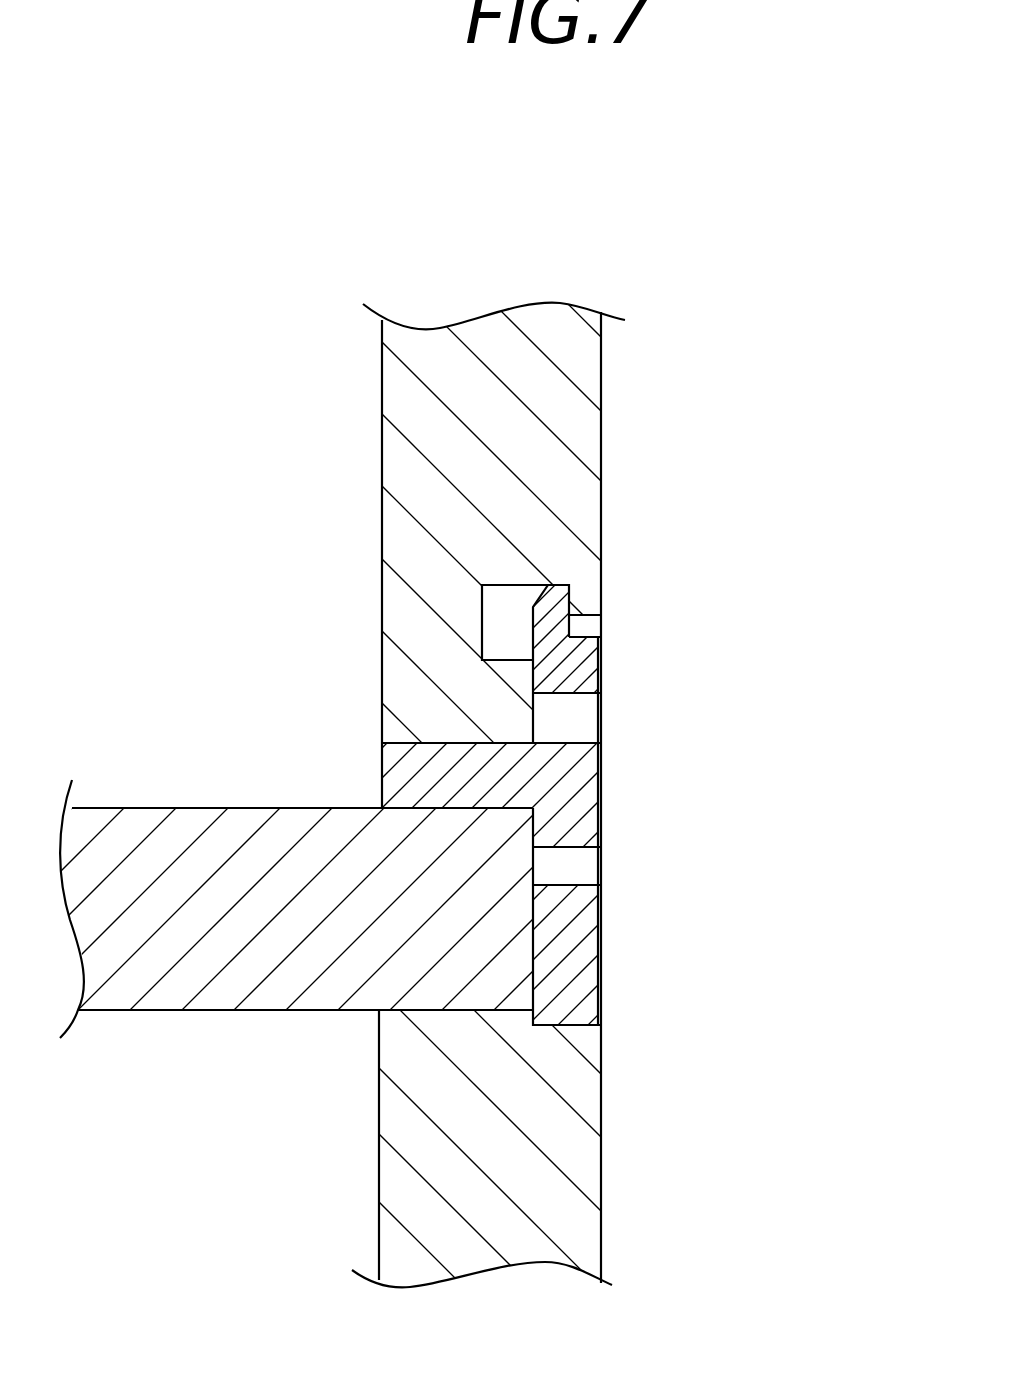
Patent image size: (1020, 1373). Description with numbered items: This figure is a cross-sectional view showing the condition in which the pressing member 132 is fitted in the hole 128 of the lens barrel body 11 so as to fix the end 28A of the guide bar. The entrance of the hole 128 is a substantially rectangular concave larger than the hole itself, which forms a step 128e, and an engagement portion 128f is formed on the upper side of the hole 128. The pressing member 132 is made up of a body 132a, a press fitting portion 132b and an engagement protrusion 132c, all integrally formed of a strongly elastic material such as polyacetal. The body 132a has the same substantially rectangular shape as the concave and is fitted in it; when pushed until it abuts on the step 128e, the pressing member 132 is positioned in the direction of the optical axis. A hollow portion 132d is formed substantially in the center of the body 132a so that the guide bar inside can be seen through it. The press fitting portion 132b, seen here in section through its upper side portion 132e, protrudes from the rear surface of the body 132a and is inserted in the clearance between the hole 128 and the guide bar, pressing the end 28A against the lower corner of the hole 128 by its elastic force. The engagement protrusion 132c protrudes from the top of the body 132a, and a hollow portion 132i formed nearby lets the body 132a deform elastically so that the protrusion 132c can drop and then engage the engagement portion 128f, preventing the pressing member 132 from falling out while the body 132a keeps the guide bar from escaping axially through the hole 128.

The lens barrel body 11 is at (587, 433).
The hole 128 is at (433, 1010).
The step 128e is at (553, 1024).
The engagement portion 128f is at (587, 608).
The end of the guide bar 28A is at (386, 927).
The pressing member 132 is at (622, 825).
The body 132a is at (603, 948).
The press fitting portion 132b is at (398, 767).
The engagement protrusion 132c is at (533, 601).
The hollow portion 132d is at (603, 868).
The upper side portion 132e is at (316, 769).
The hollow portion 132i is at (583, 718).